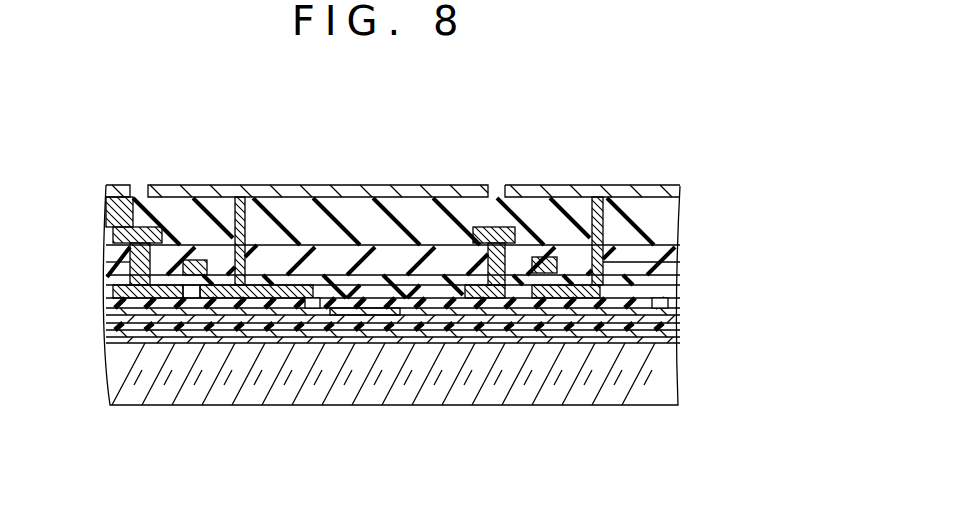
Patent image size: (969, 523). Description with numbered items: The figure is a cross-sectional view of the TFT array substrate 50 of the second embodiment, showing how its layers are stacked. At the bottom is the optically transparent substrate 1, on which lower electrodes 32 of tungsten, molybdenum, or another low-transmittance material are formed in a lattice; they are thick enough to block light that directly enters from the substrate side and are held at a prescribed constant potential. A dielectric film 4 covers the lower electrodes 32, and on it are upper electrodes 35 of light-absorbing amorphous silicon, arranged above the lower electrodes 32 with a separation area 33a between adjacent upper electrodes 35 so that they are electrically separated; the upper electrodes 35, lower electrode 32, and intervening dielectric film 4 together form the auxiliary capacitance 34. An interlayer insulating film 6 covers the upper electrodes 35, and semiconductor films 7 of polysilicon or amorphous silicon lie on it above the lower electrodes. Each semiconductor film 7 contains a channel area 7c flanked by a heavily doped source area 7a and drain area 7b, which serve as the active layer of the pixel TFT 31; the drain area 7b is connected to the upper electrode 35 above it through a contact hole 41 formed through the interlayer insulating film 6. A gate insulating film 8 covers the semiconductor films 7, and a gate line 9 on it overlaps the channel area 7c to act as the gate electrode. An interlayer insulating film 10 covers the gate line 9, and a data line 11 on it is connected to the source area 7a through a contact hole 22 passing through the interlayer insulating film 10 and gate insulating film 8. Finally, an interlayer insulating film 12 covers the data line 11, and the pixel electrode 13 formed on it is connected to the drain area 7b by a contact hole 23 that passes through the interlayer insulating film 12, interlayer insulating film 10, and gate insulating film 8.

The optically transparent substrate 1 is at (667, 375).
The dielectric film 4 is at (678, 322).
The interlayer insulating film 6 is at (127, 303).
The semiconductor film 7 is at (680, 283).
The source area 7a is at (147, 298).
The drain area 7b is at (253, 298).
The channel area 7c is at (197, 300).
The gate insulating film 8 is at (127, 278).
The gate line 9 is at (557, 267).
The interlayer insulating film 10 is at (123, 256).
The data line 11 is at (137, 232).
The interlayer insulating film 12 is at (125, 212).
The pixel electrode 13 is at (345, 190).
The contact hole 22 is at (465, 225).
The contact hole 23 is at (240, 200).
The pixel TFT 31 is at (195, 250).
The lower electrode 32 is at (431, 333).
The separation area 33a is at (363, 315).
The auxiliary capacitance 34 is at (461, 318).
The upper electrode 35 is at (680, 307).
The contact hole 41 is at (313, 305).
The TFT array substrate 50 is at (662, 160).